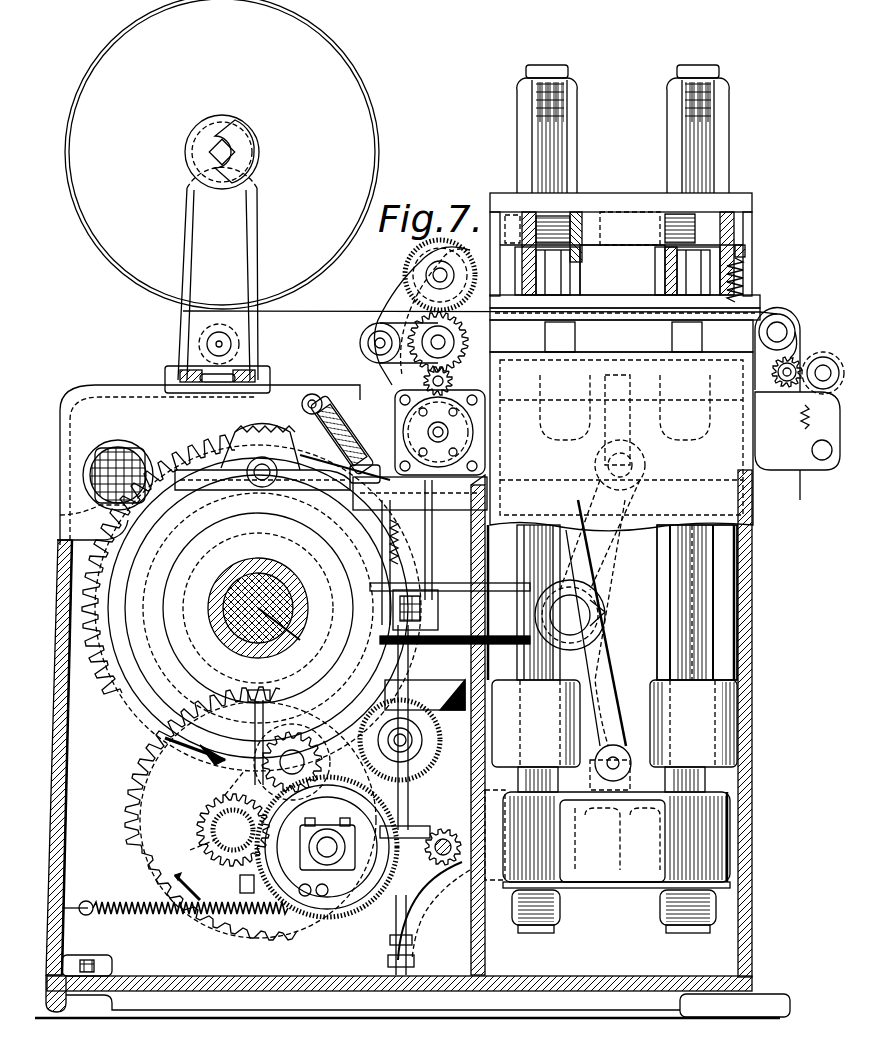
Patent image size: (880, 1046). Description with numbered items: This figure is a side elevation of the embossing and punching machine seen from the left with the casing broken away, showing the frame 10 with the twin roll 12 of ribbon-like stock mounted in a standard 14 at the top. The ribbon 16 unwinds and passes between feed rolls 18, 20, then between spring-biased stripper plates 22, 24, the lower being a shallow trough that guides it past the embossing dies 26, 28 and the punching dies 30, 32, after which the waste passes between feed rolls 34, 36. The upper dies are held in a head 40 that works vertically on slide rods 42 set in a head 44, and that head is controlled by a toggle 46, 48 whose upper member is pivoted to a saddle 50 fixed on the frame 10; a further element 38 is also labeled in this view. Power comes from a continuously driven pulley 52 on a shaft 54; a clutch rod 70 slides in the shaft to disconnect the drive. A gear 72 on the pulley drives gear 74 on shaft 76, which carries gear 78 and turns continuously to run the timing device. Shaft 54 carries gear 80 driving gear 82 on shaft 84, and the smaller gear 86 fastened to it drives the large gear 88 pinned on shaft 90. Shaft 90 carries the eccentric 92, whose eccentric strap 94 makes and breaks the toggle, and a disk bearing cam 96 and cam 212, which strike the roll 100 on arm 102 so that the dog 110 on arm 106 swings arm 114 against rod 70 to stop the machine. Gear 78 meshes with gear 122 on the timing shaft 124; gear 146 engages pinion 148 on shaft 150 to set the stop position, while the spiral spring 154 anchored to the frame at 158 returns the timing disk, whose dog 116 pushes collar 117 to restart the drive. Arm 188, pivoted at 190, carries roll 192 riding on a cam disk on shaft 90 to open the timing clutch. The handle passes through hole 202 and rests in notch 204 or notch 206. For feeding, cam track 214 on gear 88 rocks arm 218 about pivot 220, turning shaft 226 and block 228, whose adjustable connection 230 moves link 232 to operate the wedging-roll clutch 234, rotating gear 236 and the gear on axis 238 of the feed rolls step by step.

The frame 10 is at (752, 785).
The roll 12 is at (345, 57).
The standard 14 is at (240, 217).
The ribbon 16 is at (305, 311).
The feed roll 18 is at (455, 321).
The feed roll 20 is at (415, 263).
The stripper plate 22 is at (640, 318).
The stripper plate 24 is at (635, 301).
The embossing die 26 is at (580, 291).
The embossing die 28 is at (562, 320).
The punching die 30 is at (752, 284).
The punching die 32 is at (752, 300).
The feed roll 34 is at (800, 361).
The feed roll 36 is at (804, 421).
The column 38 is at (750, 557).
The head 40 is at (648, 226).
The slide rod 42 is at (545, 73).
The head 44 is at (632, 876).
The toggle member 46 is at (612, 712).
The toggle member 48 is at (605, 580).
The saddle 50 is at (655, 457).
The pulley 52 is at (612, 666).
The shaft 54 is at (412, 738).
The rod 70 is at (435, 690).
The gear 72 is at (614, 723).
The gear 74 is at (487, 800).
The shaft 76 is at (423, 935).
The gear 78 is at (440, 836).
The gear 80 is at (487, 744).
The gear 82 is at (127, 828).
The shaft 84 is at (190, 870).
The gear 86 is at (205, 832).
The gear 88 is at (185, 792).
The shaft 90 is at (280, 632).
The eccentric 92 is at (235, 577).
The eccentric strap 94 is at (482, 577).
The cam 96 is at (373, 585).
The roll 100 is at (251, 603).
The arm 102 is at (88, 700).
The arm 106 is at (432, 552).
The dog 110 is at (432, 576).
The arm 114 is at (432, 537).
The dog 116 is at (327, 847).
The collar 117 is at (434, 911).
The gear 122 is at (292, 762).
The shaft 124 is at (325, 840).
The gear 146 is at (263, 762).
The pinion 148 is at (502, 870).
The shaft 150 is at (485, 832).
The spiral spring 154 is at (128, 915).
The frame anchor 158 is at (66, 915).
The bell crank arm 188 is at (232, 770).
The pivot 190 is at (240, 883).
The roll 192 is at (292, 760).
The hole 202 is at (113, 455).
The notch 204 is at (92, 520).
The notch 206 is at (88, 676).
The cam 212 is at (225, 632).
The cam track 214 is at (222, 432).
The arm 218 is at (295, 394).
The pivot 220 is at (262, 481).
The shaft 226 is at (360, 410).
The block 228 is at (355, 447).
The adjustable connection 230 is at (352, 468).
The link 232 is at (420, 493).
The clutch 234 is at (465, 437).
The gear 236 is at (430, 383).
The axis 238 is at (408, 318).